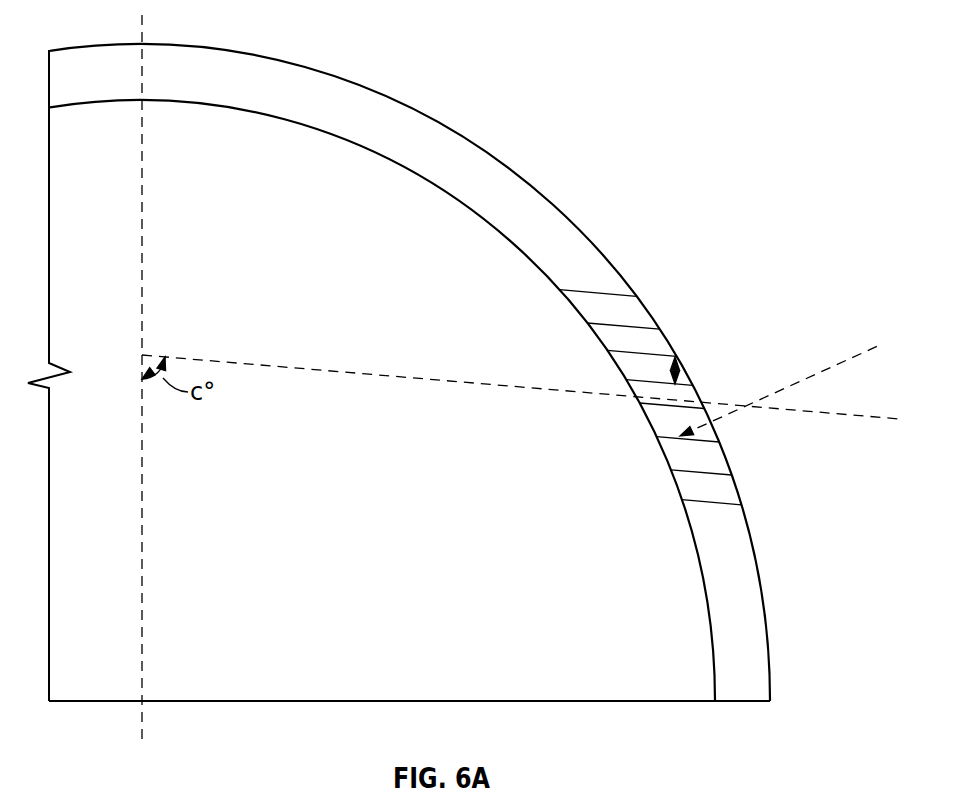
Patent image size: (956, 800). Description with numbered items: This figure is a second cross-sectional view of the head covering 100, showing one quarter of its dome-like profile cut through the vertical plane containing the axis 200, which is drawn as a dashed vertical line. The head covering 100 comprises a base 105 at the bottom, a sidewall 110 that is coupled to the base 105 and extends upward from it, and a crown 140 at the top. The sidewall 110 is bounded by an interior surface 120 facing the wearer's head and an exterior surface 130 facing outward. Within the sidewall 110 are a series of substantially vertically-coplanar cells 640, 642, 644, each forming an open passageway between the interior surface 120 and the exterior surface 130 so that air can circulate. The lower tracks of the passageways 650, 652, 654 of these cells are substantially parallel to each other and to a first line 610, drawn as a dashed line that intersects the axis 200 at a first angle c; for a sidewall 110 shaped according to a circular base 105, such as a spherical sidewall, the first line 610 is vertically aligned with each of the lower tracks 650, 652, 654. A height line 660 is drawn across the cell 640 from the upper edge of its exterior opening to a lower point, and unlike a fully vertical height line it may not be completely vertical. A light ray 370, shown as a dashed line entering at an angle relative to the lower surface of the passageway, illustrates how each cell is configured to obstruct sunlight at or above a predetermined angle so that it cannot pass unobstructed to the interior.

The head covering 100 is at (718, 77).
The base 105 is at (607, 702).
The sidewall 110 is at (552, 222).
The interior surface 120 is at (676, 489).
The exterior surface 130 is at (749, 514).
The crown 140 is at (441, 359).
The axis 200 is at (141, 280).
The light ray 370 is at (836, 368).
The first line 610 is at (362, 375).
The cell 640 is at (657, 360).
The cell 642 is at (690, 407).
The cell 644 is at (706, 432).
The lower track of the passageway 650 is at (636, 379).
The lower track of the passageway 652 is at (654, 407).
The lower track of the passageway 654 is at (667, 437).
The height line 660 is at (683, 369).